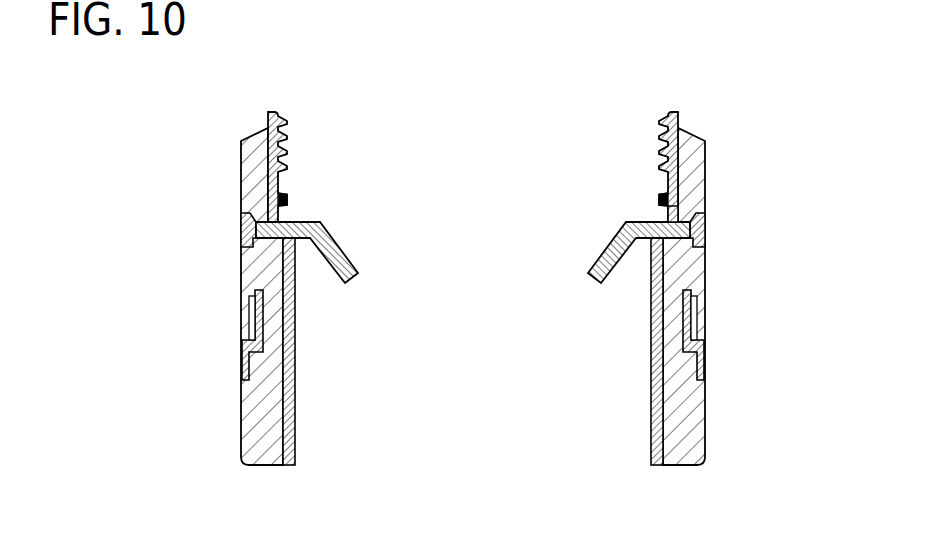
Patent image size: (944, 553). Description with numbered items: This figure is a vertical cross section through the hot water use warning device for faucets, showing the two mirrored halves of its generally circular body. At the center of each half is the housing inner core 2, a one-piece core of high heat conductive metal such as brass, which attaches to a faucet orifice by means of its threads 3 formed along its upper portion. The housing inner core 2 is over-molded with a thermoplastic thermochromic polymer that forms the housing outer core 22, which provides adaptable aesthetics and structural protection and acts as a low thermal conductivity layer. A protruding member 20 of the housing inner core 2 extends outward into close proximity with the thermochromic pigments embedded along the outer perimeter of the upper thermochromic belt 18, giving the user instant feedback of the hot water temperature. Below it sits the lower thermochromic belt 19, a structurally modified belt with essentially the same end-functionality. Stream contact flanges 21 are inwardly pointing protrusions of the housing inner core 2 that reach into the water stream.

The housing inner core 2 is at (652, 382).
The threads 3 is at (294, 162).
The upper thermochromic belt 18 is at (712, 228).
The lower thermochromic belt 19 is at (712, 342).
The protruding member 20 is at (690, 218).
The stream contact flanges 21 is at (603, 250).
The housing outer core 22 is at (683, 418).